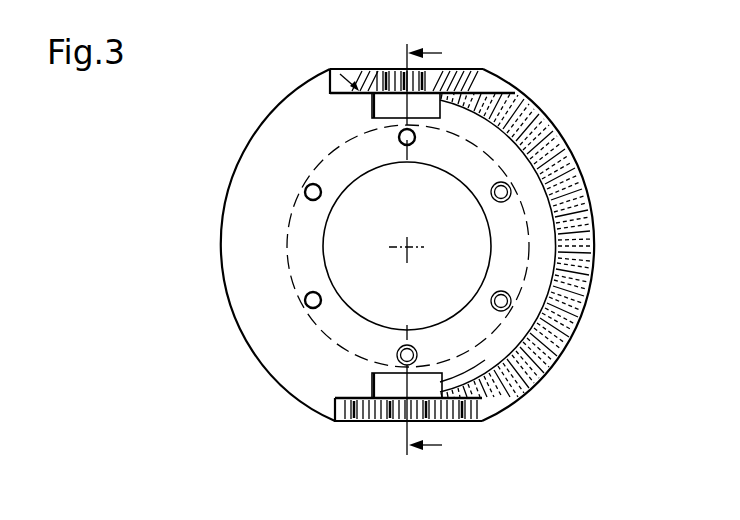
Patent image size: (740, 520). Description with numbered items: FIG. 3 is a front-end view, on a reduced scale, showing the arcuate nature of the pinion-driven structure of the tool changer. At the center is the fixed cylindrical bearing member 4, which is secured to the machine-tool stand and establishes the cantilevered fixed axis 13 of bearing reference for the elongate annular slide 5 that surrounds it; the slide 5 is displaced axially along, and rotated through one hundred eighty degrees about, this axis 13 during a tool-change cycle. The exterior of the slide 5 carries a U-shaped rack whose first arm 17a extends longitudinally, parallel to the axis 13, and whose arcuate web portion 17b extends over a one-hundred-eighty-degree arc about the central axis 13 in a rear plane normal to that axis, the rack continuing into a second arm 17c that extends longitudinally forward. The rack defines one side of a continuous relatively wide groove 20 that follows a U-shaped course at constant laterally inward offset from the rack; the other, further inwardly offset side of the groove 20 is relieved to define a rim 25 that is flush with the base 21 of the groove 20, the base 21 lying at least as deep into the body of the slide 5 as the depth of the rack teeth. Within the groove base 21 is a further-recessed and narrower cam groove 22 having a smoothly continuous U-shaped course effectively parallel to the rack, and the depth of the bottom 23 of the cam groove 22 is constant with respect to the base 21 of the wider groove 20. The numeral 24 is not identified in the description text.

The fixed cylindrical bearing member 4 is at (422, 237).
The elongate annular slide 5 is at (286, 247).
The fixed axis 13 is at (406, 248).
The first arm 17a is at (363, 67).
The arcuate web portion 17b is at (578, 200).
The second arm 17c is at (346, 422).
The groove 20 is at (340, 71).
The base of groove 21 is at (370, 88).
The cam groove 22 is at (443, 96).
The bottom of cam groove 23 is at (448, 90).
The support block 24 is at (370, 118).
The rim 25 is at (475, 82).